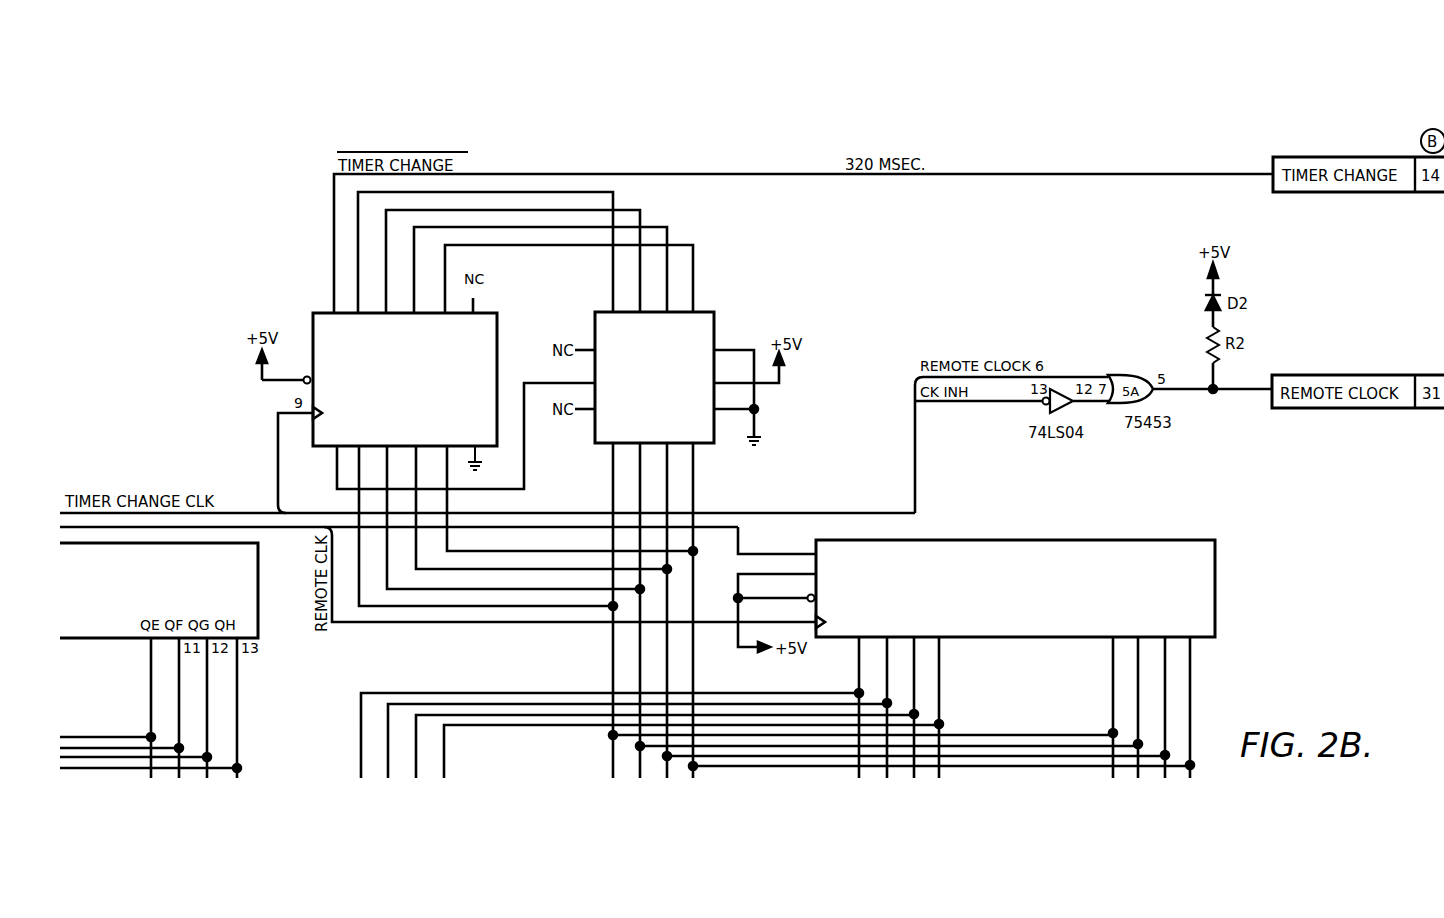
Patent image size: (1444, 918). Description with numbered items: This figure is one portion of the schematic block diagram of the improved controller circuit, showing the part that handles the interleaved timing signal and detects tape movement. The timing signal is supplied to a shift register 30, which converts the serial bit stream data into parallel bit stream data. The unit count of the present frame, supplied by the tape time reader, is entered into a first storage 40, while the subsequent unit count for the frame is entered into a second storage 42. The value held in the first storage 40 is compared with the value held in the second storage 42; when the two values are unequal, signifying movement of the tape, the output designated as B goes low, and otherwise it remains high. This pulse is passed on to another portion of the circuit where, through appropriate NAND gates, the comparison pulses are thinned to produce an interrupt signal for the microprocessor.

The second storage 42 is at (497, 325).
The first storage 40 is at (716, 312).
The shift register 30 is at (1215, 540).